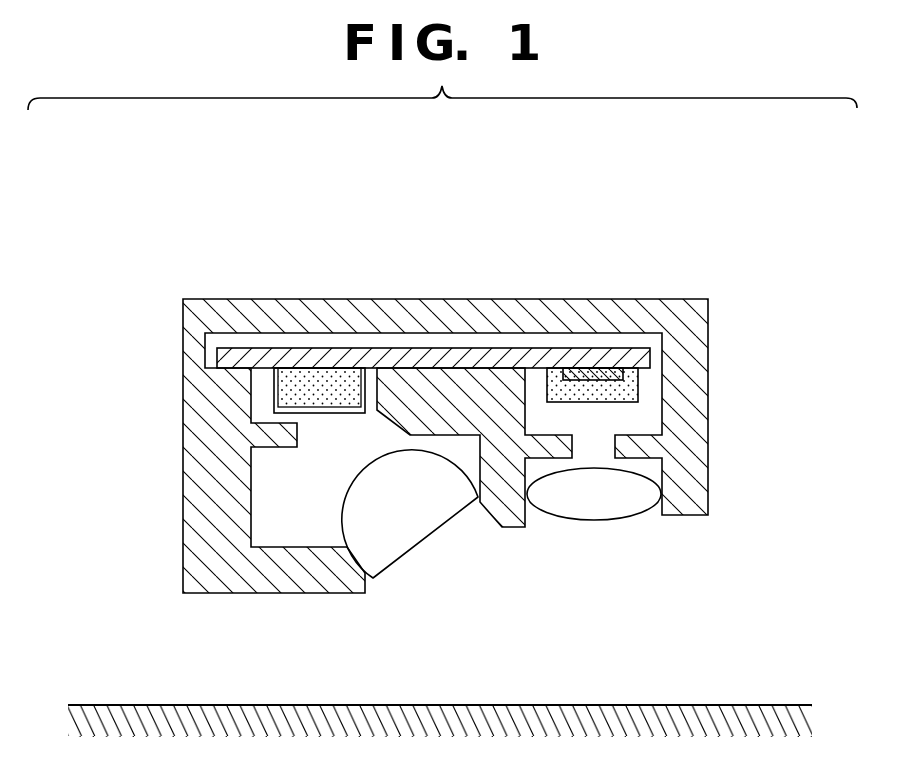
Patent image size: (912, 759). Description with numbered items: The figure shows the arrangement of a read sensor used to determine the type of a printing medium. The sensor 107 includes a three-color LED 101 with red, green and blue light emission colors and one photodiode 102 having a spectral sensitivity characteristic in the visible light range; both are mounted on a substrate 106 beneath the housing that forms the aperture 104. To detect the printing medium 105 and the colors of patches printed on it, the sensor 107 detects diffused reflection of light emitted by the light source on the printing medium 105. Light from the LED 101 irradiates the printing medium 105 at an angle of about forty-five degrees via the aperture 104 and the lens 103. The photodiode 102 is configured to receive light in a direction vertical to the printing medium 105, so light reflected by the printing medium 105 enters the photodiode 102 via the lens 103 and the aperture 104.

The three-color LED 101 is at (324, 378).
The photodiode 102 is at (597, 390).
The lens 103 is at (593, 507).
The aperture 104 is at (708, 431).
The printing medium 105 is at (781, 705).
The substrate 106 is at (428, 360).
The sensor 107 is at (708, 275).